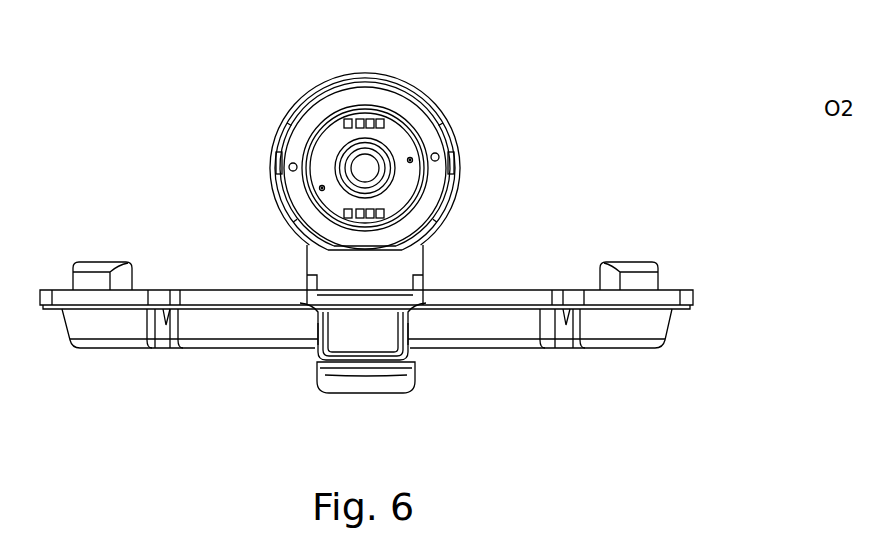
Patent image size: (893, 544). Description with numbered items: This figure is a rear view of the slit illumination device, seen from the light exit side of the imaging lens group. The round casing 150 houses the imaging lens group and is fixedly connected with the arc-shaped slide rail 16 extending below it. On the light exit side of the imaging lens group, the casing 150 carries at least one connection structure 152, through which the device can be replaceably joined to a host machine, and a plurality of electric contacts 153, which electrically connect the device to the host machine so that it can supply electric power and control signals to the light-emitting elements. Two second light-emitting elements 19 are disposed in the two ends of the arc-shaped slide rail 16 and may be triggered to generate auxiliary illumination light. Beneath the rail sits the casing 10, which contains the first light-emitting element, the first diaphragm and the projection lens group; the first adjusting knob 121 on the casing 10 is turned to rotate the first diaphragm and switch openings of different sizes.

The casing 10 is at (388, 383).
The arc-shaped slide rail 16 is at (683, 295).
The second light-emitting element 19 is at (99, 270).
The first adjusting knob 121 is at (412, 358).
The casing 150 is at (470, 152).
The connection structure 152 is at (403, 122).
The electric contacts 153 is at (381, 121).